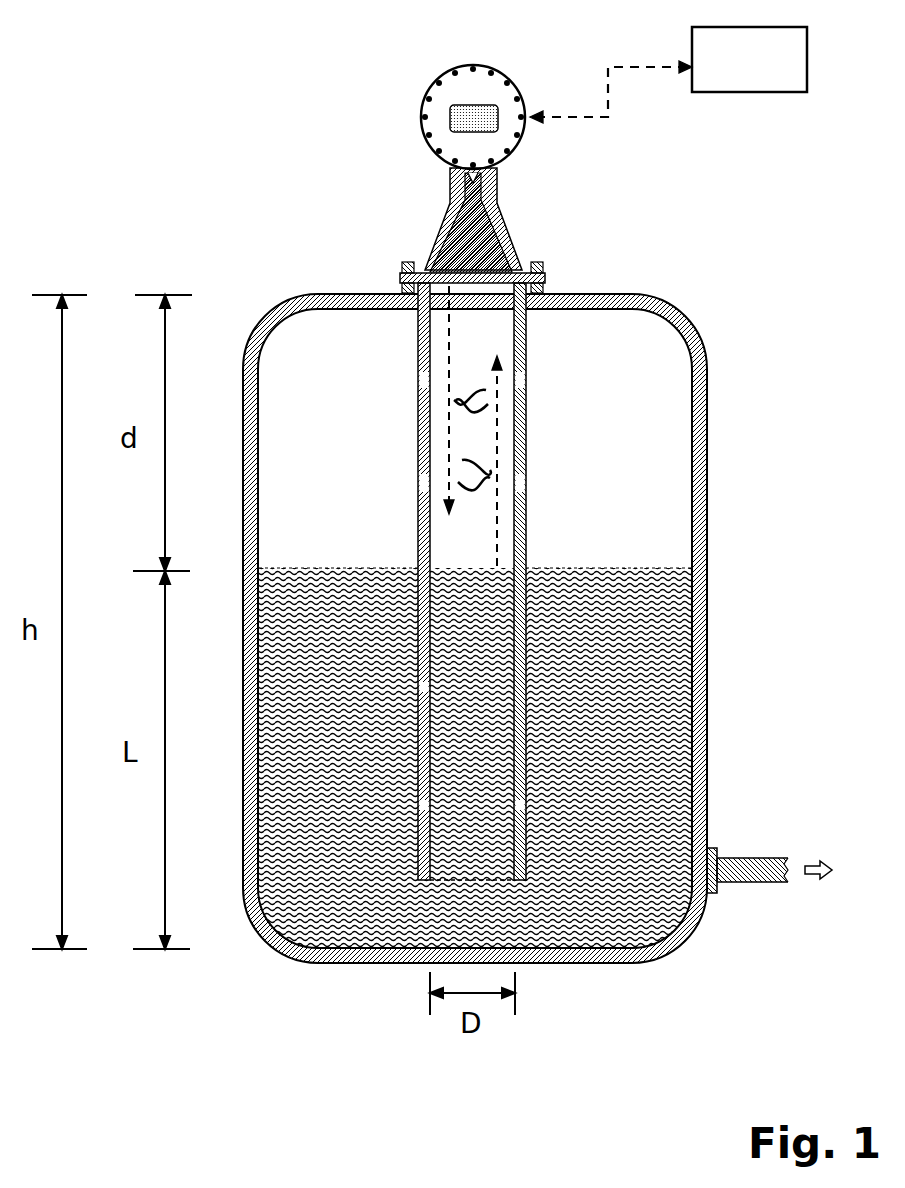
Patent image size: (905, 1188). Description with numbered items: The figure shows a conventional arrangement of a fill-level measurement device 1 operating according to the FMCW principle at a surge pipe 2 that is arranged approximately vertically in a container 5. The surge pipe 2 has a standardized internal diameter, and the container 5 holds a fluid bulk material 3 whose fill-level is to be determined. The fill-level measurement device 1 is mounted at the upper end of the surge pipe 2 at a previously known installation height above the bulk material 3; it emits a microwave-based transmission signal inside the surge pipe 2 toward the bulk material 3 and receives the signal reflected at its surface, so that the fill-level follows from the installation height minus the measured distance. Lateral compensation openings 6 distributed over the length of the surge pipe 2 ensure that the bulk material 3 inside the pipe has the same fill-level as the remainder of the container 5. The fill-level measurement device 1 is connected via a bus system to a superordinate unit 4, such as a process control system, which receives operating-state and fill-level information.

The fill-level measurement device 1 is at (362, 106).
The surge pipe 2 is at (528, 422).
The fluid bulk material 3 is at (590, 759).
The superordinate unit 4 is at (759, 79).
The container 5 is at (704, 612).
The lateral compensation openings 6 is at (533, 560).